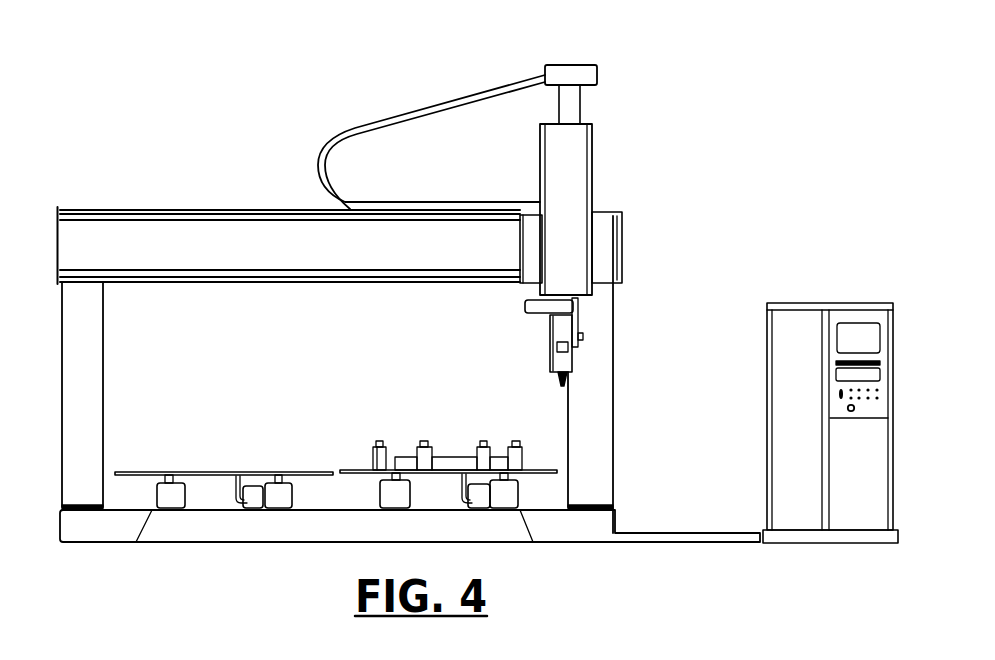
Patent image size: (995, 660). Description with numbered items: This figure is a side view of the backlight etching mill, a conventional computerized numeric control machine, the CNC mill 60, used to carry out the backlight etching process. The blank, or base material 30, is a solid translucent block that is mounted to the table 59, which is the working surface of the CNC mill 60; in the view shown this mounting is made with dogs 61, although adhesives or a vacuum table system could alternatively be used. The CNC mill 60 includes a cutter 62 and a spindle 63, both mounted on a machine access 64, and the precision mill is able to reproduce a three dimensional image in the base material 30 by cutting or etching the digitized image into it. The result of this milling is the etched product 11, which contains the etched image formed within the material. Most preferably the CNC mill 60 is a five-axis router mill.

The CNC mill 60 is at (754, 198).
The machine access 64 is at (582, 192).
The spindle 63 is at (554, 370).
The cutter 62 is at (559, 384).
The table 59 is at (360, 468).
The base material 30 is at (453, 461).
The etched product 11 is at (440, 404).
The dogs 61 is at (371, 446).